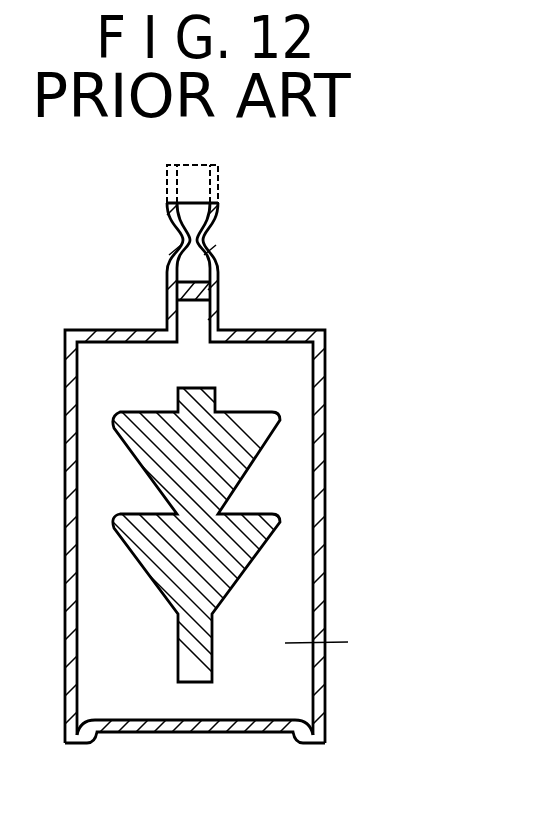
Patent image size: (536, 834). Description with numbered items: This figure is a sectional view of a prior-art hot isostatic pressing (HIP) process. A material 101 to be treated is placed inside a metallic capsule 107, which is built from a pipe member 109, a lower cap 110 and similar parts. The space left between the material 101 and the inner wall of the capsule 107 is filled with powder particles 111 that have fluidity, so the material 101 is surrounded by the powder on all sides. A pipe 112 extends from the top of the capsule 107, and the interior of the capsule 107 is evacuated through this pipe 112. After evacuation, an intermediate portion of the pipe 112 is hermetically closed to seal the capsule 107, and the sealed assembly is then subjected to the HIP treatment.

The material to be treated 101 is at (262, 540).
The metallic capsule 107 is at (327, 404).
The pipe member 109 is at (327, 353).
The lower cap 110 is at (238, 733).
The powder particles 111 is at (330, 638).
The pipe 112 is at (220, 222).